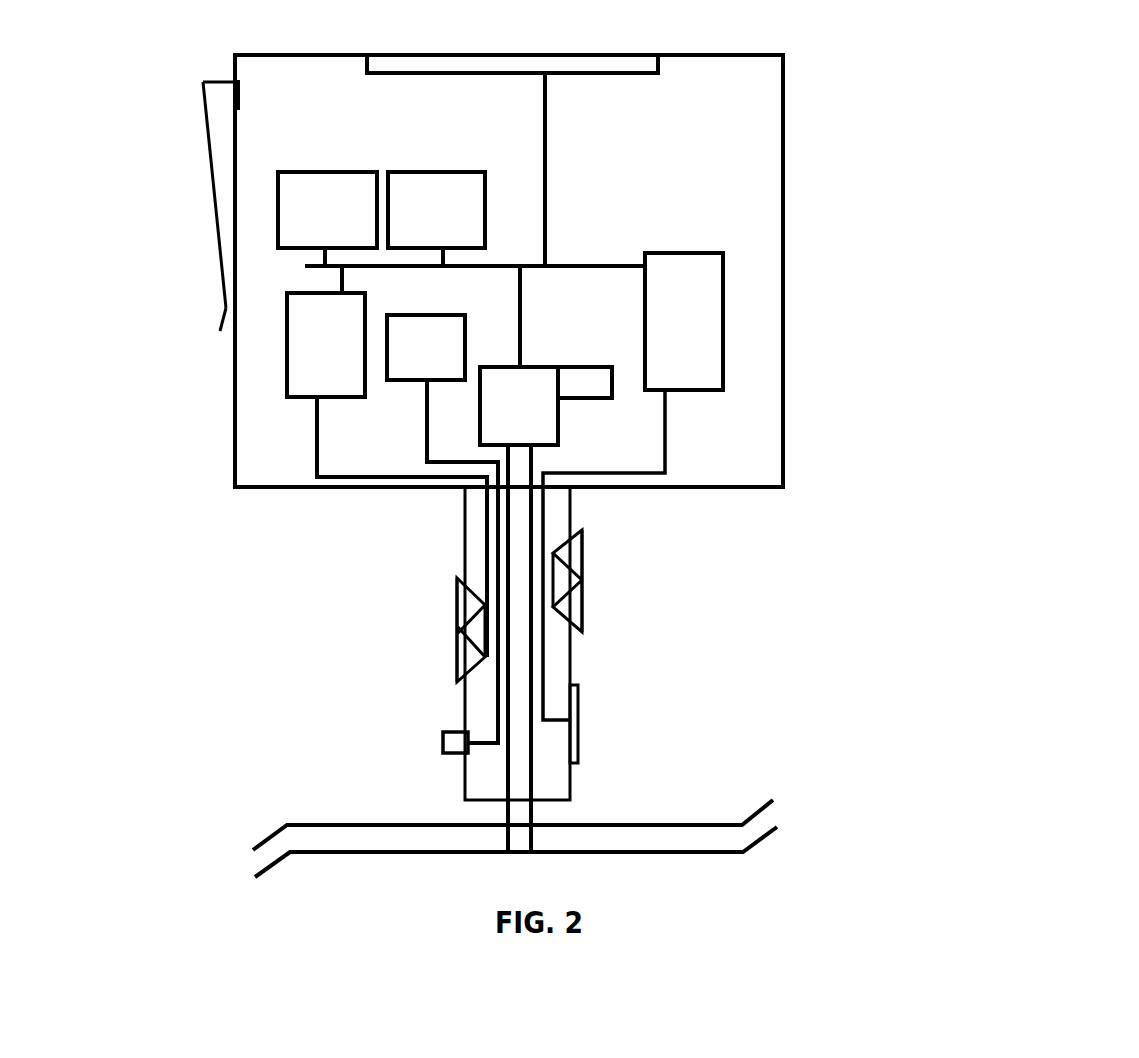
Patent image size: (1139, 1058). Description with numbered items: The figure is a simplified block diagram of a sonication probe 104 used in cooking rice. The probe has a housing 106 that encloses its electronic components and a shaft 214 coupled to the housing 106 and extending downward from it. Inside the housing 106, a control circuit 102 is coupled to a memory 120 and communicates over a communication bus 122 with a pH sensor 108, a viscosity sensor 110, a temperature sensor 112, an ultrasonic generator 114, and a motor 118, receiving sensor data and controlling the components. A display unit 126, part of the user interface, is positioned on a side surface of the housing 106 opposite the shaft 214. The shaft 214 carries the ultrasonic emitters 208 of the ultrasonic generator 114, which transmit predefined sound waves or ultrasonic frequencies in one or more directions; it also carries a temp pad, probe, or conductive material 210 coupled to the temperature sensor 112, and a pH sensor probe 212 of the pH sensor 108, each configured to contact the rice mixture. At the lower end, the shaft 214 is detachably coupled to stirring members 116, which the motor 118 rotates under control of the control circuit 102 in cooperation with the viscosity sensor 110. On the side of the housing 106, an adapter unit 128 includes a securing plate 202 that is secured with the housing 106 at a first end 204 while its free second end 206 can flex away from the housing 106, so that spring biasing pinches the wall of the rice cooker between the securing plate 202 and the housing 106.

The control circuit 102 is at (327, 219).
The sonication probe 104 is at (1058, 114).
The housing 106 is at (783, 103).
The pH sensor 108 is at (442, 529).
The viscosity sensor 110 is at (585, 371).
The temperature sensor 112 is at (633, 486).
The ultrasonic generator 114 is at (387, 461).
The stirring members 116 is at (445, 852).
The motor 118 is at (519, 559).
The memory 120 is at (436, 219).
The communication bus 122 is at (585, 263).
The display unit 126 is at (534, 160).
The adapter unit 128 is at (223, 82).
The securing plate 202 is at (210, 170).
The first end 204 is at (240, 88).
The free second end 206 is at (217, 317).
The ultrasonic emitters 208 is at (515, 606).
The temp pad, probe, and/or conductive material 210 is at (766, 722).
The pH sensor probe 212 is at (356, 758).
The shaft 214 is at (463, 522).